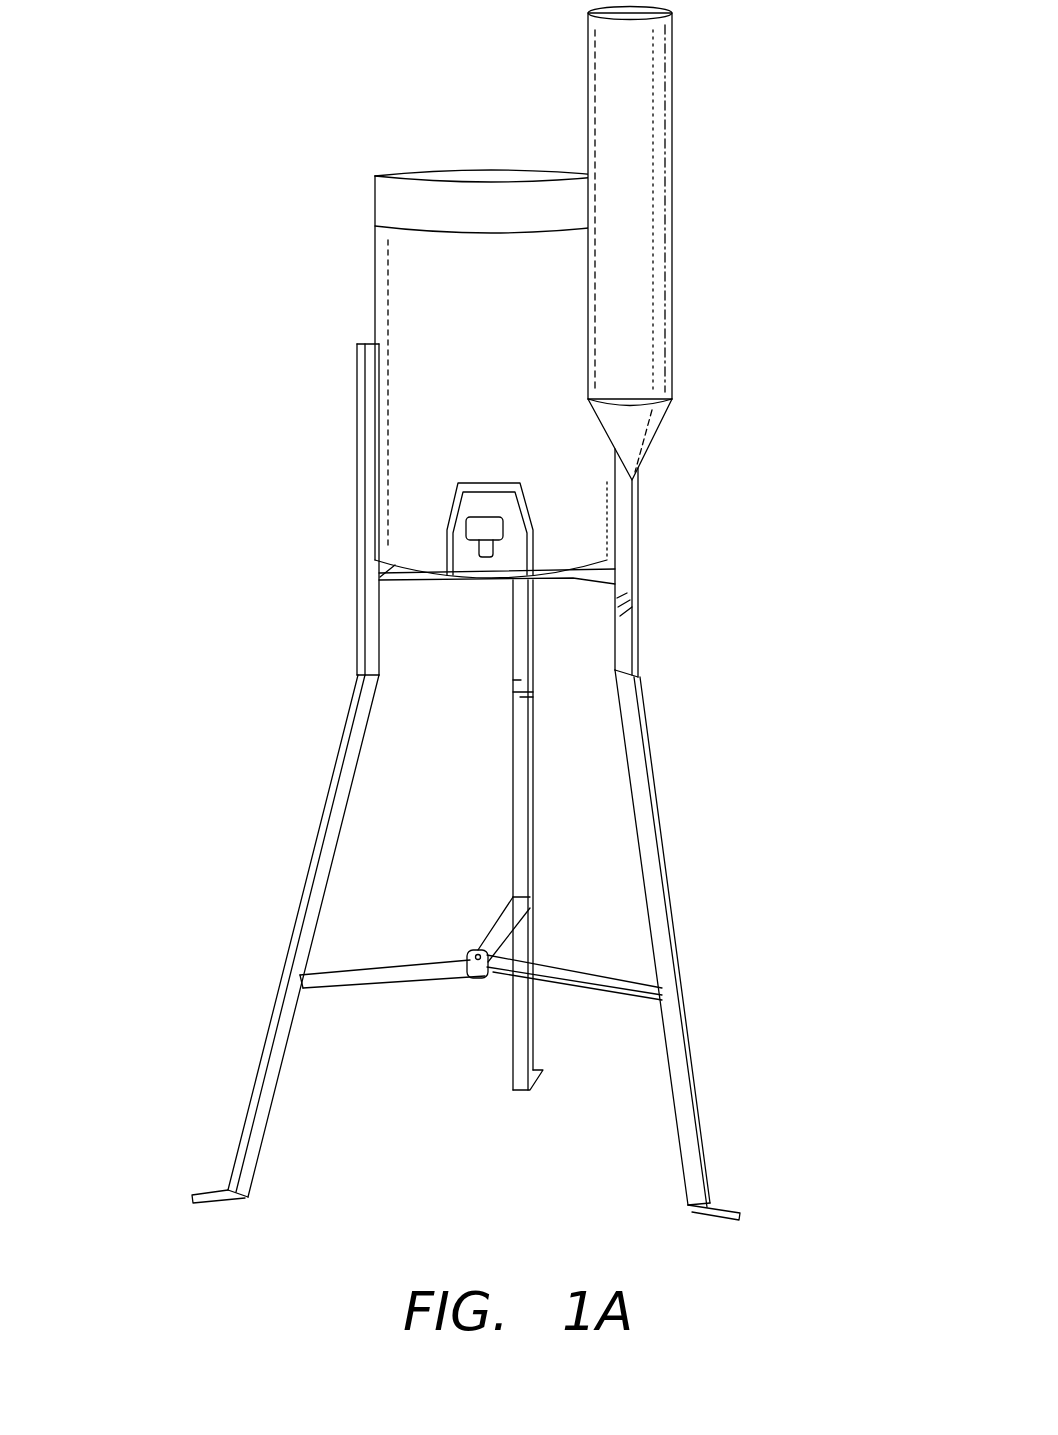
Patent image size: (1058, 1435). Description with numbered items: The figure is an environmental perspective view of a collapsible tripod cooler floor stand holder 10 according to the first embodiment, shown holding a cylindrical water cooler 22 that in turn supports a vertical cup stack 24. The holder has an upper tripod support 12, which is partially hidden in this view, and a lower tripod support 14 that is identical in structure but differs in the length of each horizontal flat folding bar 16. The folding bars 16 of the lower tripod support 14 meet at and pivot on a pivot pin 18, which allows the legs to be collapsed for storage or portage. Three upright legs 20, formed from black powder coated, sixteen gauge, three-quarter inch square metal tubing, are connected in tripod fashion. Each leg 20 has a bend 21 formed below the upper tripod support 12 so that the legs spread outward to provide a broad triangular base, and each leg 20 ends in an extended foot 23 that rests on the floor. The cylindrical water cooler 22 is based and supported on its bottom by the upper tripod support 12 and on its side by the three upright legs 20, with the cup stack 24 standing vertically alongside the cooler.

The collapsible tripod cooler floor stand holder 10 is at (372, 115).
The upper tripod support 12 is at (597, 582).
The lower tripod support 14 is at (458, 1034).
The horizontal flat folding bar 16 is at (505, 913).
The pivot pin 18 is at (477, 952).
The upright leg 20 is at (342, 790).
The bend 21 is at (371, 620).
The cylindrical water cooler 22 is at (532, 340).
The extended foot 23 is at (733, 1202).
The vertical cup stack 24 is at (643, 205).